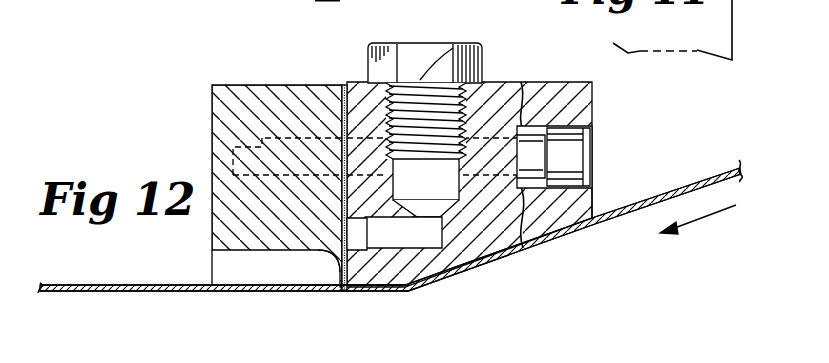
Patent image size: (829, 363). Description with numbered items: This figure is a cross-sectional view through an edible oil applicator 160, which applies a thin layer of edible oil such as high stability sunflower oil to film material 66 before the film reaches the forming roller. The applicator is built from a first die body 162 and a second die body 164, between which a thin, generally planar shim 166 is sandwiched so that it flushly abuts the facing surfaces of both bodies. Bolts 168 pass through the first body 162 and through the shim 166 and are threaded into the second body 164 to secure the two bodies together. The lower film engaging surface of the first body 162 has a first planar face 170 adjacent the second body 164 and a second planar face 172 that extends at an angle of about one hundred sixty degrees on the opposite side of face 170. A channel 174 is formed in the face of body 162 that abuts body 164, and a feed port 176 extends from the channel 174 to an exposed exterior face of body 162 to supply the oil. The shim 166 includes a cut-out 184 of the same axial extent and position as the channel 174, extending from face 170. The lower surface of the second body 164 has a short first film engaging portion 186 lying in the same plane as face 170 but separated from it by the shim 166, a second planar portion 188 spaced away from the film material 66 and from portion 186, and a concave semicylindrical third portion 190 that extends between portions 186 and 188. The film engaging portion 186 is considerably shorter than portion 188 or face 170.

The edible oil applicator 160 is at (248, 64).
The first die body 162 is at (606, 108).
The second die body 164 is at (200, 109).
The shim 166 is at (340, 70).
The bolt 168 is at (595, 157).
The first planar face 170 is at (394, 292).
The second planar face 172 is at (556, 229).
The channel 174 is at (341, 222).
The feed port 176 is at (482, 54).
The cut-out 184 is at (343, 232).
The first film engaging portion 186 is at (338, 292).
The second planar portion 188 is at (214, 253).
The third semicylindrical portion 190 is at (338, 270).
The film material 66 is at (722, 177).